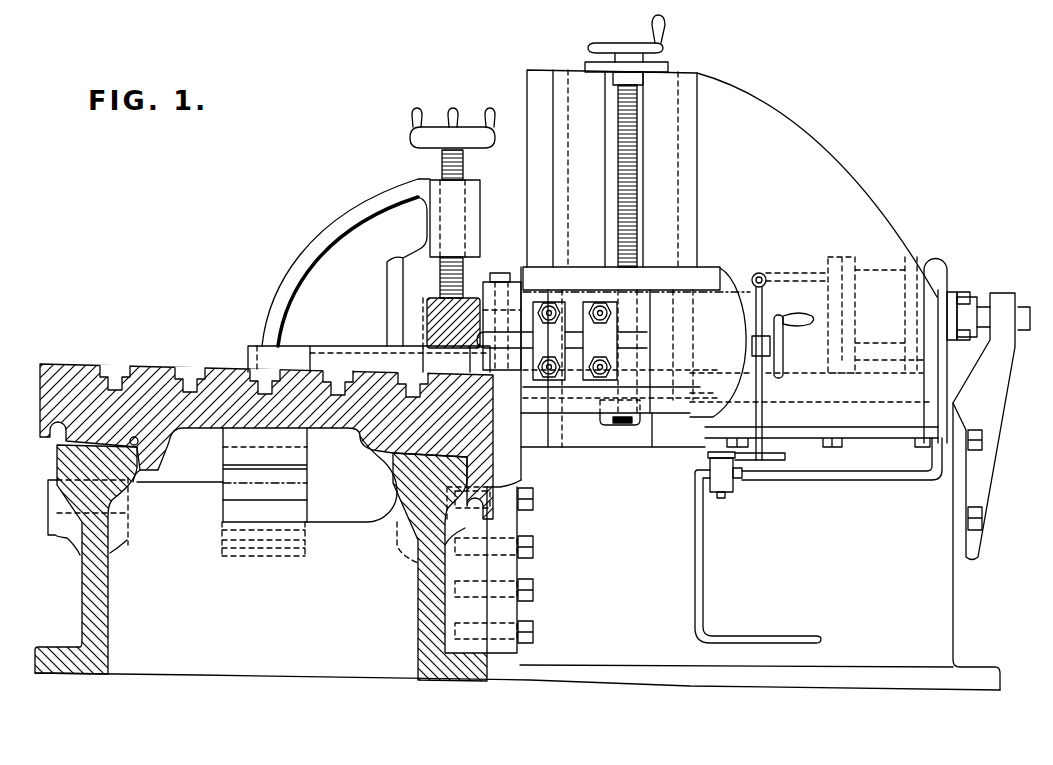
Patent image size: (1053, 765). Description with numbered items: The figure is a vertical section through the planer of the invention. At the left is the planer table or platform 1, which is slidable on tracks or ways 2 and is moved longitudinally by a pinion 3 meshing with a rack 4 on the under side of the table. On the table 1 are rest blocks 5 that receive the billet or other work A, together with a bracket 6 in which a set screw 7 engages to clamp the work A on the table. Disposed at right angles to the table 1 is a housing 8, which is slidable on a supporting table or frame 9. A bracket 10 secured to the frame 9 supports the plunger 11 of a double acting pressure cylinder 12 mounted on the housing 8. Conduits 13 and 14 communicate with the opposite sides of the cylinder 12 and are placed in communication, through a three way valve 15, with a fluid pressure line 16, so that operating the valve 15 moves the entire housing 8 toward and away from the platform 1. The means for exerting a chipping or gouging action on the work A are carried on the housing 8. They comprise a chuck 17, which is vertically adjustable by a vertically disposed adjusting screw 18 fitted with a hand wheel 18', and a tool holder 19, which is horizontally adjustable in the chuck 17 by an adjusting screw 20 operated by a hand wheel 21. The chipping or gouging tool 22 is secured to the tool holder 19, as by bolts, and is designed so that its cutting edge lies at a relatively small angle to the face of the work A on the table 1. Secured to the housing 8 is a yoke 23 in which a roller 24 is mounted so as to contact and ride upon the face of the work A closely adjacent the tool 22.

The planer table 1 is at (40, 409).
The tracks 2 is at (57, 463).
The pinion 3 is at (300, 476).
The rack 4 is at (300, 448).
The rest blocks 5 is at (320, 345).
The bracket 6 is at (313, 244).
The set screw 7 is at (440, 166).
The housing 8 is at (867, 197).
The supporting frame 9 is at (943, 580).
The bracket 10 is at (1007, 348).
The plunger 11 is at (976, 306).
The double acting pressure cylinder 12 is at (880, 290).
The conduit 13 is at (764, 445).
The conduit 14 is at (891, 479).
The three way valve 15 is at (730, 486).
The fluid pressure line 16 is at (700, 578).
The chuck 17 is at (705, 268).
The adjusting screw 18 is at (621, 156).
The feed screw handwheel 18' is at (647, 38).
The tool holder 19 is at (585, 381).
The adjusting screw 20 is at (763, 337).
The hand wheel 21 is at (783, 352).
The chipping or gouging tool 22 is at (575, 350).
The yoke 23 is at (507, 284).
The roller 24 is at (481, 287).
The work A is at (434, 297).